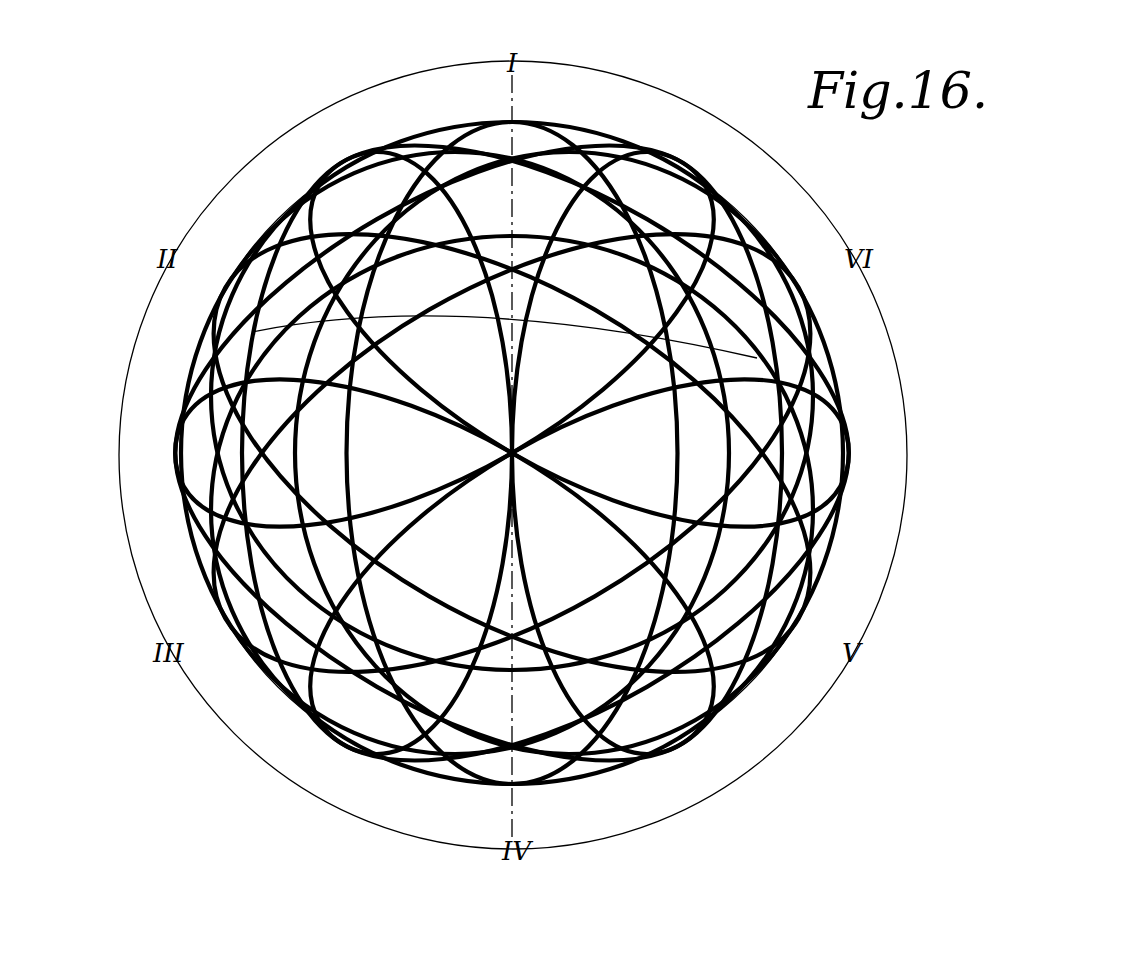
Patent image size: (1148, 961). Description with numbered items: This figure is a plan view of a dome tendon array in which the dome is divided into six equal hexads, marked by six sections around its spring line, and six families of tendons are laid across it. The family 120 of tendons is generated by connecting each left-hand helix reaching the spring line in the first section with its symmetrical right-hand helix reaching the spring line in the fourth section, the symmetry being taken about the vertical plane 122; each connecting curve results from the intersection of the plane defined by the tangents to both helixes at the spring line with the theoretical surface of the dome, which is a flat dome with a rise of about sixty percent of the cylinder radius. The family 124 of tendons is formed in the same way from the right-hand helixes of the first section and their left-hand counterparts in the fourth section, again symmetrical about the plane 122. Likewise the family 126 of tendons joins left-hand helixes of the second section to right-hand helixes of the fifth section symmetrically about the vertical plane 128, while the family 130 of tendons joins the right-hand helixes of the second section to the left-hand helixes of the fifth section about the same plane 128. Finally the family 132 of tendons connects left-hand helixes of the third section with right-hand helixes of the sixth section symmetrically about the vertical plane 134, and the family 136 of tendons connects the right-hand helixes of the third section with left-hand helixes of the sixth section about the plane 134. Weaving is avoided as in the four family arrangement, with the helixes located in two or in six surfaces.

The family of tendons 120 is at (697, 347).
The vertical plane 122 is at (965, 453).
The family of tendons 124 is at (444, 453).
The family of tendons 126 is at (497, 232).
The vertical plane 128 is at (297, 825).
The family of tendons 130 is at (460, 453).
The family of tendons 132 is at (396, 311).
The vertical plane 134 is at (727, 825).
The family of tendons 136 is at (495, 662).